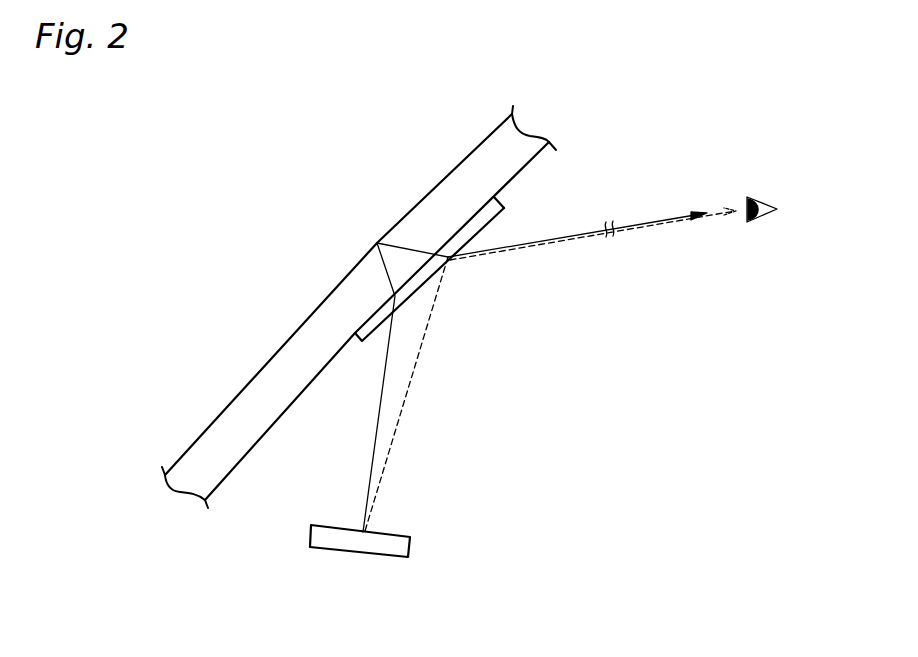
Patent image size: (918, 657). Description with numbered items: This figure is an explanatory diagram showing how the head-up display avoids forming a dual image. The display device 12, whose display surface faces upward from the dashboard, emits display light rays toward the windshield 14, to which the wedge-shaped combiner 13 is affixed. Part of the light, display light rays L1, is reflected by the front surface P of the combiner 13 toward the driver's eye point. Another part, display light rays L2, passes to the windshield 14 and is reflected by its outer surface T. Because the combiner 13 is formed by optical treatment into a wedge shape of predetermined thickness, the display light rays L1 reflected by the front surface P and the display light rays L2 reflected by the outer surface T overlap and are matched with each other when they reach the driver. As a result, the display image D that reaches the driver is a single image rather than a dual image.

The display device 12 is at (412, 545).
The combiner 13 is at (463, 219).
The windshield 14 is at (359, 307).
The outer surface of the windshield T is at (425, 197).
The front surface of the combiner P is at (497, 218).
The display image D is at (637, 224).
The display light rays L1 is at (408, 390).
The display light rays L2 is at (382, 397).